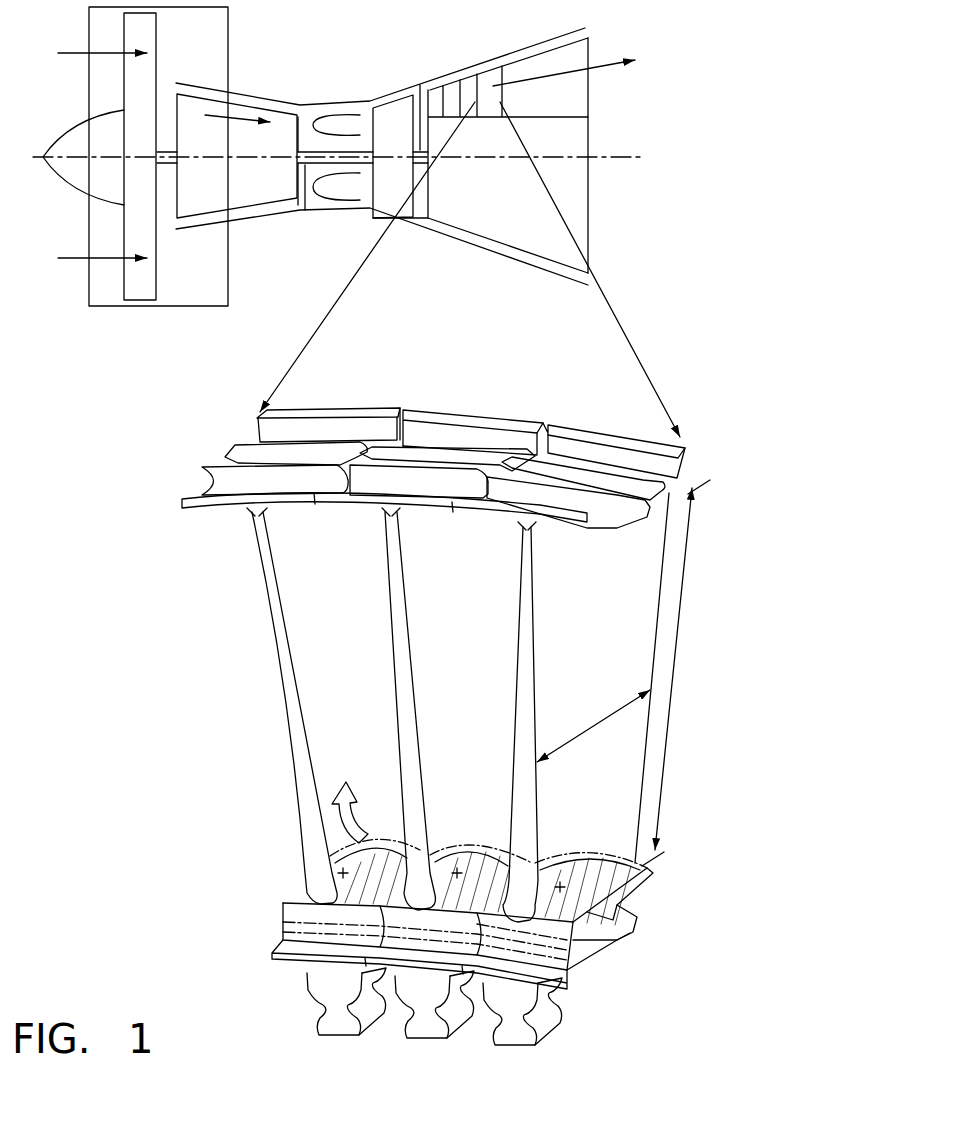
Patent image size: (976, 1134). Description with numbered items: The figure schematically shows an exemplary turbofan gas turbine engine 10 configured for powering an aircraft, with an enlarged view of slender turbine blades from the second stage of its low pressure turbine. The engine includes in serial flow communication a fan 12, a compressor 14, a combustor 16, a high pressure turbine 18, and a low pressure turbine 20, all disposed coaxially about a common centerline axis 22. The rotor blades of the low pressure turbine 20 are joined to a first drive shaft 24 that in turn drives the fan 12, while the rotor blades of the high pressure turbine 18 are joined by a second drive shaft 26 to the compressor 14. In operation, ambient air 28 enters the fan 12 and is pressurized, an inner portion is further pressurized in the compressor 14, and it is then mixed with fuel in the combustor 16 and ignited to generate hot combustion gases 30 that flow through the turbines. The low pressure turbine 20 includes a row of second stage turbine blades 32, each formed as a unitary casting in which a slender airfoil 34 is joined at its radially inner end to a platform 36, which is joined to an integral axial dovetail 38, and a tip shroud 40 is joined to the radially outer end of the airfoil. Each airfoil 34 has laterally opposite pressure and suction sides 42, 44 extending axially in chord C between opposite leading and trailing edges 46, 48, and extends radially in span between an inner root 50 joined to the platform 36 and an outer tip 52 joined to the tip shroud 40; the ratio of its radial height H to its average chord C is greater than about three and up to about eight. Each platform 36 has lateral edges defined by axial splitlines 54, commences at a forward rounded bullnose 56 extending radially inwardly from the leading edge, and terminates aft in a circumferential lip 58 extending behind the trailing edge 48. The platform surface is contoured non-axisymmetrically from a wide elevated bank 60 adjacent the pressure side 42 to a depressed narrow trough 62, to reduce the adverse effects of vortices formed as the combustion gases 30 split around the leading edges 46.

The turbofan gas turbine engine 10 is at (300, 80).
The fan 12 is at (157, 33).
The compressor 14 is at (245, 191).
The combustor 16 is at (321, 198).
The high pressure turbine 18 is at (405, 141).
The low pressure turbine 20 is at (513, 210).
The centerline axis 22 is at (603, 157).
The first drive shaft 24 is at (420, 85).
The second drive shaft 26 is at (305, 213).
The ambient air 28 is at (73, 53).
The hot combustion gases 30 is at (368, 125).
The second stage turbine blades 32 is at (232, 445).
The slender airfoil 34 is at (262, 632).
The platform 36 is at (285, 907).
The axial dovetail 38 is at (305, 997).
The tip shroud 40 is at (180, 502).
The pressure side 42 is at (477, 710).
The suction side 44 is at (402, 680).
The leading edge 46 is at (537, 790).
The trailing edge 48 is at (648, 740).
The root 50 is at (485, 847).
The tip 52 is at (252, 510).
The axial splitlines 54 is at (363, 923).
The bullnose 56 is at (588, 945).
The lip 58 is at (648, 872).
The elevated bank 60 is at (588, 866).
The trough 62 is at (587, 912).
The chord C is at (595, 722).
The radial height H is at (680, 595).